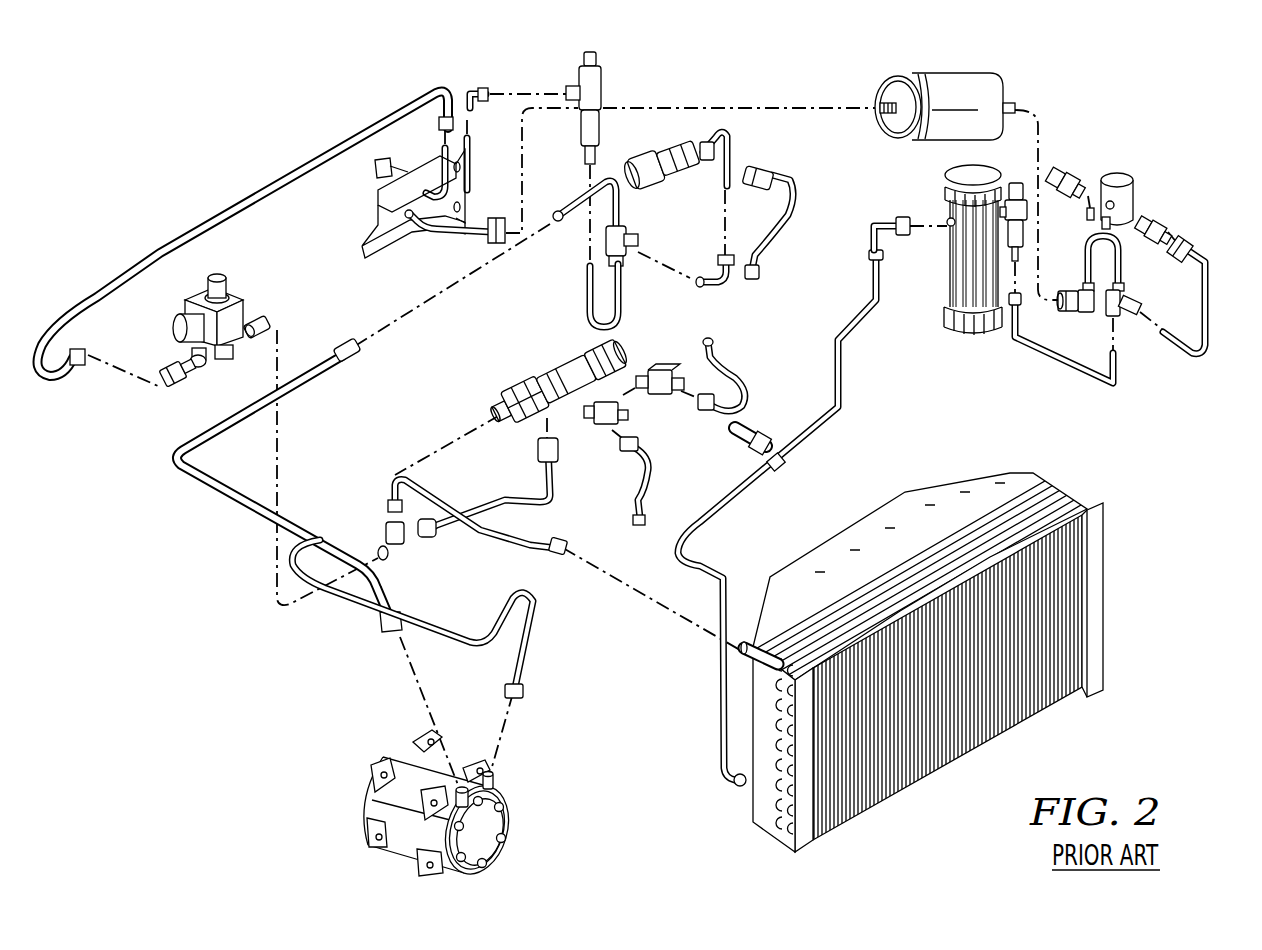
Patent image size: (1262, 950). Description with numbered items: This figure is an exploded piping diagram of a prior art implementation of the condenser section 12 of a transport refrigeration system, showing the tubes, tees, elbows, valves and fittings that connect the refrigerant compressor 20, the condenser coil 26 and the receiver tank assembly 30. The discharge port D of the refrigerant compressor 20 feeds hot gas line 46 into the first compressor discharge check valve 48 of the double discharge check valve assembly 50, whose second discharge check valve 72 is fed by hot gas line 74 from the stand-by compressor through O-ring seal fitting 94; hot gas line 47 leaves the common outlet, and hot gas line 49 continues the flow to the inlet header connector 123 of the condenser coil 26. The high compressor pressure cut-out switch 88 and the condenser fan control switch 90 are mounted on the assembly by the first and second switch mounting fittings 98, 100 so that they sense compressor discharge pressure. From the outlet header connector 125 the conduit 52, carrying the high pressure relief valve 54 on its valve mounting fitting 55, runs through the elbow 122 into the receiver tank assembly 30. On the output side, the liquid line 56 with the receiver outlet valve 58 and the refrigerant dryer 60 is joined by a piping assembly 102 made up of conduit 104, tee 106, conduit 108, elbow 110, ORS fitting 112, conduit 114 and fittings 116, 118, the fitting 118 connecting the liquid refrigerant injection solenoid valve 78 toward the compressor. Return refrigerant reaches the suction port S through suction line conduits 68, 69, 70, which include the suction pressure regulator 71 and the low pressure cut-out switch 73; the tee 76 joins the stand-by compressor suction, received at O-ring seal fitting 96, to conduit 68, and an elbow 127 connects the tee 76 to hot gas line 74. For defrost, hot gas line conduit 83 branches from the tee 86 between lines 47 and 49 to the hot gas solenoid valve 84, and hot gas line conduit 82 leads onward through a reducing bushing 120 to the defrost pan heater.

The condenser section 12 is at (800, 59).
The refrigerant compressor 20 is at (423, 793).
The condenser coil 26 is at (928, 484).
The receiver tank assembly 30 is at (937, 207).
The hot gas line 46 is at (535, 637).
The hot gas line 47 is at (546, 498).
The first compressor discharge check valve 48 is at (498, 398).
The hot gas line 49 is at (531, 546).
The double discharge check valve assembly 50 is at (558, 358).
The conduit 52 is at (846, 403).
The high pressure relief valve 54 is at (745, 428).
The valve mounting fitting 55 is at (767, 470).
The liquid line 56 is at (465, 245).
The receiver outlet valve 58 is at (1018, 183).
The refrigerant dryer 60 is at (942, 75).
The suction line conduit 68 is at (470, 175).
The suction line conduit 69 is at (625, 316).
The suction line conduit 70 is at (228, 497).
The suction pressure regulator 71 is at (598, 85).
The second discharge check valve 72 is at (560, 352).
The low pressure cut-out switch 73 is at (782, 179).
The hot gas line 74 is at (735, 134).
The tee 76 is at (630, 236).
The liquid refrigerant injection solenoid valve 78 is at (1140, 182).
The hot gas line conduit 82 is at (235, 205).
The hot gas line conduit 83 is at (265, 316).
The hot gas solenoid valve 84 is at (220, 296).
The tee 86 is at (400, 553).
The high compressor pressure cut-out switch 88 is at (638, 450).
The condenser fan control switch 90 is at (703, 413).
The O-ring seal fitting 94 is at (622, 351).
The O-ring seal fitting 96 is at (632, 170).
The first switch mounting fitting 98 is at (597, 427).
The second switch mounting fitting 100 is at (675, 370).
The piping assembly 102 is at (1130, 257).
The conduit 104 is at (1024, 349).
The tee 106 is at (1130, 301).
The conduit 108 is at (1122, 266).
The elbow 110 is at (1082, 296).
The ORS fitting 112 is at (1084, 310).
The conduit 114 is at (1213, 306).
The fitting 116 is at (1160, 222).
The fitting 118 is at (1075, 176).
The reducing bushing 120 is at (180, 396).
The elbow 122 is at (868, 241).
The inlet header connector 123 is at (740, 652).
The outlet header connector 125 is at (735, 790).
The elbow 127 is at (740, 290).
The suction port S is at (417, 754).
The discharge port D is at (495, 781).